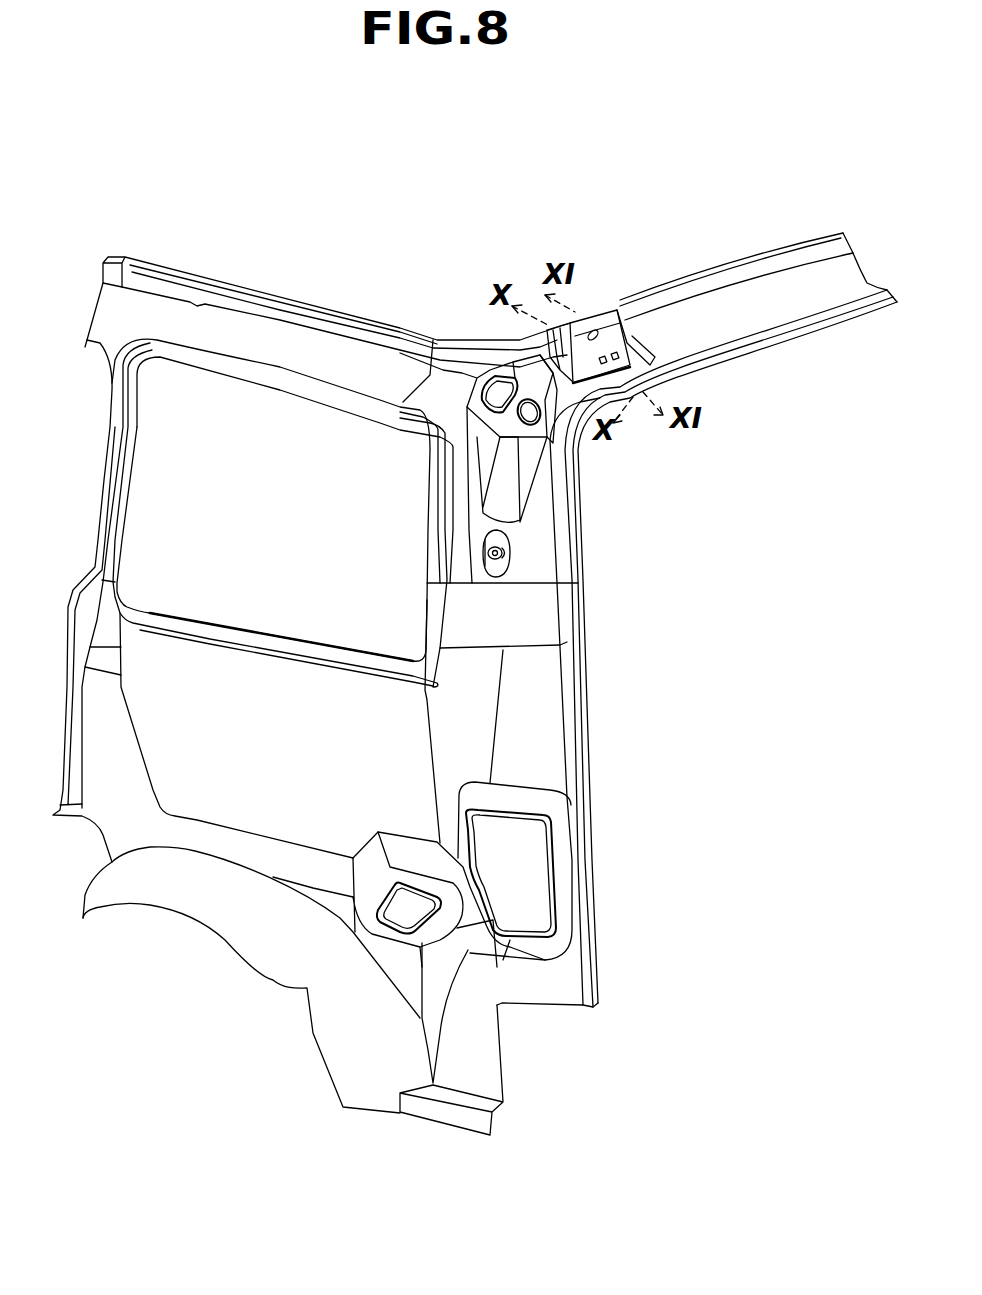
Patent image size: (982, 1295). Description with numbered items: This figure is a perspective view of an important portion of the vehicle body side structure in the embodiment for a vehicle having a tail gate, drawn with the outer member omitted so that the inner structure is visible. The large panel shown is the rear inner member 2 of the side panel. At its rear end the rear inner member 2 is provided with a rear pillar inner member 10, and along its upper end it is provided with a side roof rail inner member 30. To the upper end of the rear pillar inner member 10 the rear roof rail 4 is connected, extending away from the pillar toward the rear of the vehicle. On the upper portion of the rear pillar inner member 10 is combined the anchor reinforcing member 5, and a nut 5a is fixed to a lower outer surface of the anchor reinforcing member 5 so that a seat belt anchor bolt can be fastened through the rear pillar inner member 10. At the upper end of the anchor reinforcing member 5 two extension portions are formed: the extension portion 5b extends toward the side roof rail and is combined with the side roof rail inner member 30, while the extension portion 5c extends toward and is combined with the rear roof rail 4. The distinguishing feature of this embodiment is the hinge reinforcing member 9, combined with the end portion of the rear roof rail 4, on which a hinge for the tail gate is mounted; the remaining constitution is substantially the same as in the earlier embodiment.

The rear inner member 2 is at (91, 845).
The rear roof rail 4 is at (683, 313).
The anchor reinforcing member 5 is at (558, 470).
The nut 5a is at (487, 547).
The extension portion 5b is at (425, 365).
The extension portion 5c is at (537, 336).
The hinge reinforcing member 9 is at (600, 323).
The rear pillar inner member 10 is at (538, 618).
The side roof rail inner member 30 is at (322, 340).